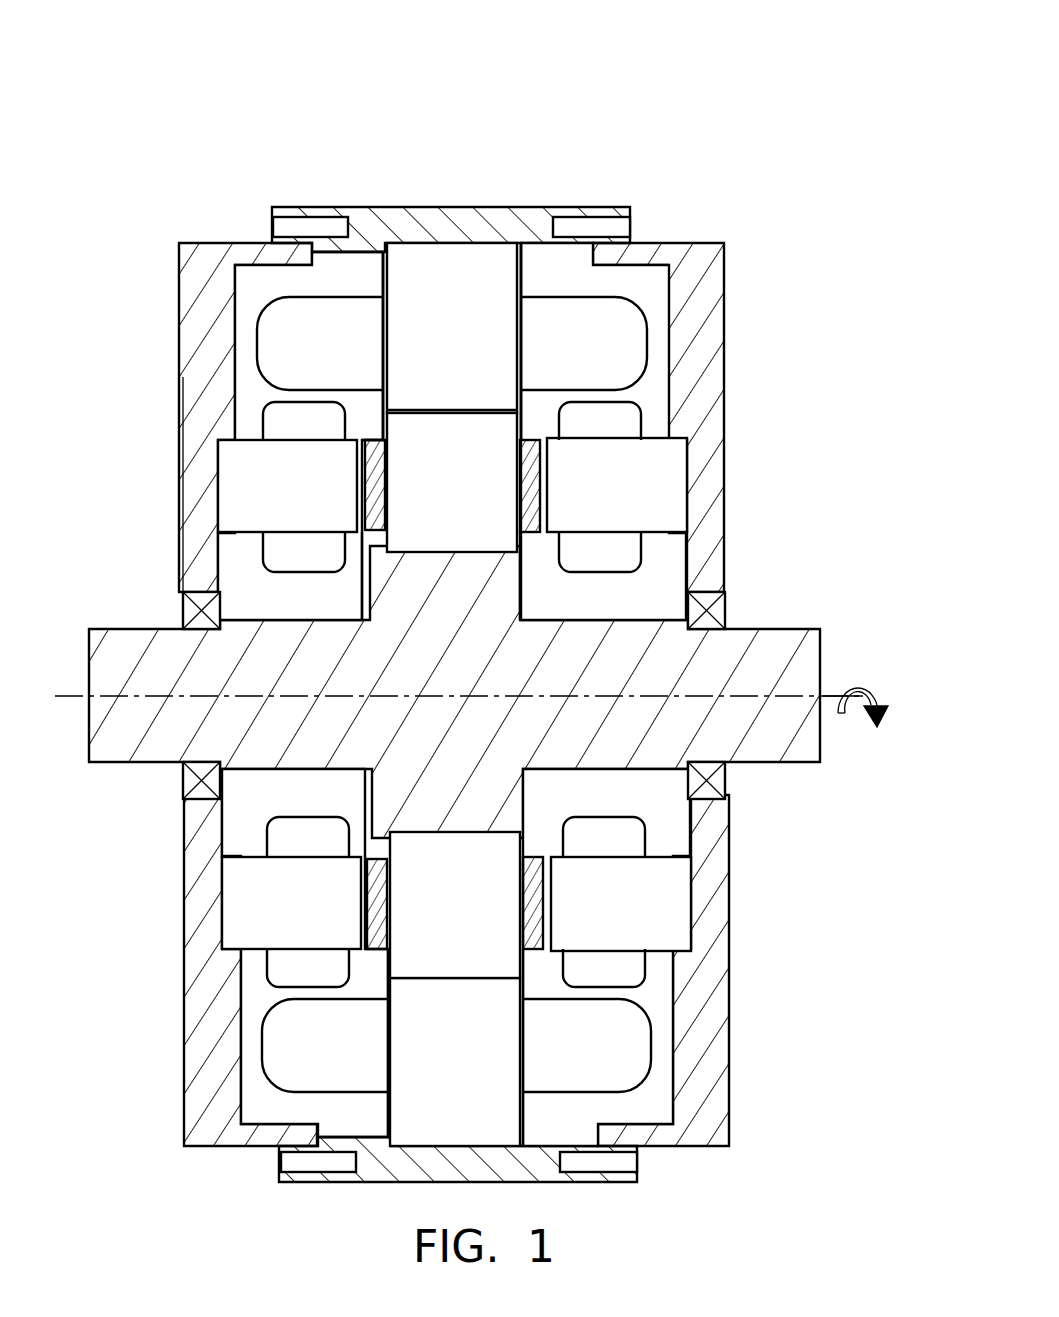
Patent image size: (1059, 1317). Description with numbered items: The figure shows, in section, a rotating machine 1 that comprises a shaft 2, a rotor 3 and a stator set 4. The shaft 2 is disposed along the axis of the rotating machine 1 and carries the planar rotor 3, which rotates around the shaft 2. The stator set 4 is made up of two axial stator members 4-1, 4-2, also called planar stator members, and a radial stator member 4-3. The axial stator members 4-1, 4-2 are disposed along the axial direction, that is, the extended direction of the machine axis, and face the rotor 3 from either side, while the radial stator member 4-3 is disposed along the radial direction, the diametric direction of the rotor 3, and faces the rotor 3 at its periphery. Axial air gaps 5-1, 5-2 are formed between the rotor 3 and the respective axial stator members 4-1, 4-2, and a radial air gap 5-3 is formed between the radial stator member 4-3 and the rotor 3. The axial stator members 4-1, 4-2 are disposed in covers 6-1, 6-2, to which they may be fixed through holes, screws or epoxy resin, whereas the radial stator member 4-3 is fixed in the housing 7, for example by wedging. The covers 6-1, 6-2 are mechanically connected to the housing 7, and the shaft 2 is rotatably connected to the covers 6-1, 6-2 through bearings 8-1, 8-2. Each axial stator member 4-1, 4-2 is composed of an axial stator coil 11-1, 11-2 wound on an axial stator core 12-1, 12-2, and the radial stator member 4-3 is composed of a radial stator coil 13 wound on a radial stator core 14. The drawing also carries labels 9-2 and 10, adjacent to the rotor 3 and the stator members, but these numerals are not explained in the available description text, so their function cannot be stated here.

The rotating machine 1 is at (124, 186).
The shaft 2 is at (797, 641).
The rotor 3 is at (534, 418).
The stator set 4 is at (820, 4).
The axial stator member 4-1 is at (217, 446).
The axial stator member 4-2 is at (691, 456).
The radial stator member 4-3 is at (372, 286).
The axial air gap 5-1 is at (363, 533).
The axial air gap 5-2 is at (545, 532).
The radial air gap 5-3 is at (367, 440).
The cover 6-1 is at (195, 341).
The cover 6-2 is at (697, 262).
The housing 7 is at (437, 219).
The bearing 8-1 is at (200, 612).
The bearing 8-2 is at (714, 607).
The fixing member 9-2 is at (296, 262).
The rotor 10 is at (420, 524).
The axial stator coil 11-1 is at (283, 426).
The axial stator coil 11-2 is at (622, 424).
The axial stator core 12-1 is at (240, 490).
The axial stator core 12-2 is at (662, 508).
The radial stator coil 13 is at (568, 308).
The radial stator core 14 is at (485, 265).